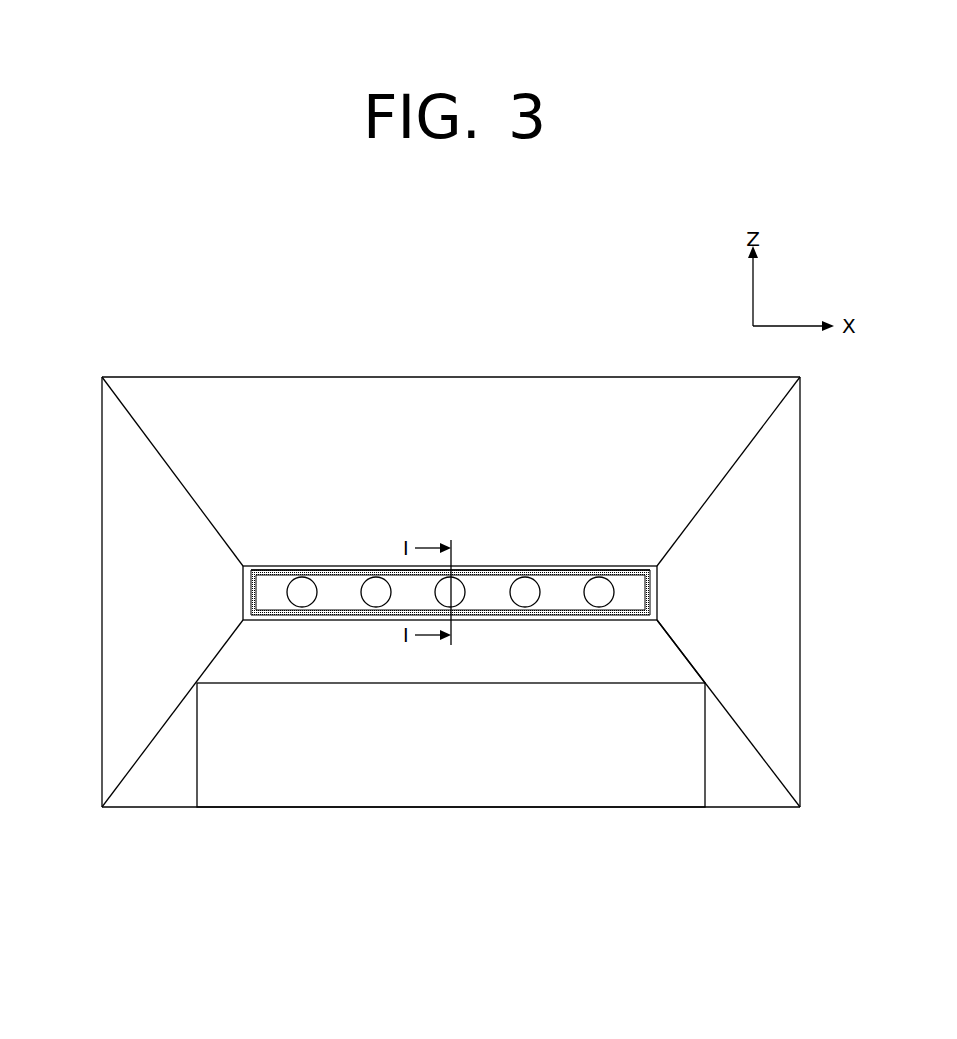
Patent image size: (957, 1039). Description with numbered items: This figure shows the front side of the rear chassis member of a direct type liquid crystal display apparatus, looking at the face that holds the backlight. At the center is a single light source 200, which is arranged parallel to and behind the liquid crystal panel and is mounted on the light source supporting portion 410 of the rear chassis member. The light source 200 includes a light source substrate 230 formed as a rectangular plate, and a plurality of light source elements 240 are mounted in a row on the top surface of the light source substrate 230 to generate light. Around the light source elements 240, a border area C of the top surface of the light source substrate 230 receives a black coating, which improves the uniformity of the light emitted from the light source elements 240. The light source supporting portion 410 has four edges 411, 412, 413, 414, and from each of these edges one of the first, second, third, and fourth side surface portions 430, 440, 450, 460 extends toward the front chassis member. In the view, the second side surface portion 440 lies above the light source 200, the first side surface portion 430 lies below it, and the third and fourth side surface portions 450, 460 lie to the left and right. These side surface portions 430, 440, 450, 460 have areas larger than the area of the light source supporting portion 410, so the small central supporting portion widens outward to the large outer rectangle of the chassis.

The light source 200 is at (450, 476).
The light source substrate 230 is at (327, 585).
The light source elements 240 is at (468, 582).
The light source supporting portion 410 is at (325, 620).
The edge 411 is at (550, 620).
The edge 412 is at (543, 566).
The edge 413 is at (240, 577).
The edge 414 is at (658, 599).
The first side surface portion 430 is at (372, 795).
The second side surface portion 440 is at (497, 393).
The third side surface portion 450 is at (108, 562).
The fourth side surface portion 460 is at (793, 557).
The border area C is at (630, 566).